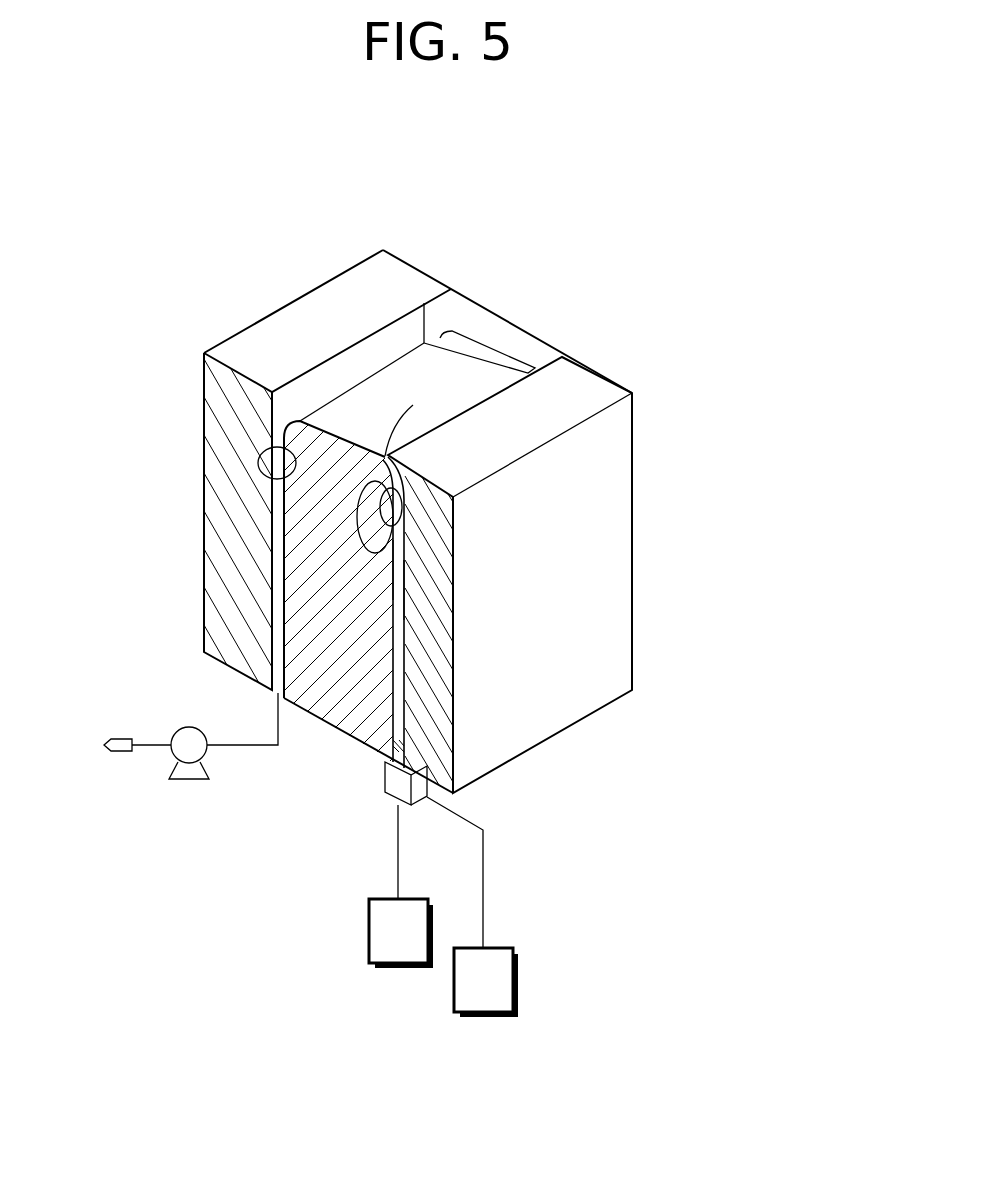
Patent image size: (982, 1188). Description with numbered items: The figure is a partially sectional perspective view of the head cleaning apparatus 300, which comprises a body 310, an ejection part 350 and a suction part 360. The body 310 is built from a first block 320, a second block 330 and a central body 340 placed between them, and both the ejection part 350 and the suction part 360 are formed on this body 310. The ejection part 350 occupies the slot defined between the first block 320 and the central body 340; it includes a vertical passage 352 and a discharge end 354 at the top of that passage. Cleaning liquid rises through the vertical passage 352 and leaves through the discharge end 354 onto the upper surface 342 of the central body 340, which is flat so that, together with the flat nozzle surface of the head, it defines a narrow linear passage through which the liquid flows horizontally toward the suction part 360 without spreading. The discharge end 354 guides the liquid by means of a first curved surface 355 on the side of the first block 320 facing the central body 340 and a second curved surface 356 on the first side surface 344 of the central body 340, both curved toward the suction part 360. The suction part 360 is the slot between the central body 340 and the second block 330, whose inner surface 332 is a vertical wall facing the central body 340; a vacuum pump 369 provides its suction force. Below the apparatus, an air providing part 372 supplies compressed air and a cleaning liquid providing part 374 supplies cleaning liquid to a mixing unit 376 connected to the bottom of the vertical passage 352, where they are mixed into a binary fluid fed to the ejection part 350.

The head cleaning apparatus 300 is at (565, 153).
The body 310 is at (203, 516).
The first block 320 is at (578, 377).
The second block 330 is at (313, 290).
The inner surface 332 is at (262, 450).
The central body 340 is at (486, 360).
The upper surface 342 is at (443, 382).
The first side surface 344 is at (393, 630).
The ejection part 350 is at (714, 518).
The vertical passage 352 is at (400, 583).
The discharge end 354 is at (398, 554).
The first curved surface 355 is at (393, 525).
The second curved surface 356 is at (413, 405).
The suction part 360 is at (270, 572).
The vacuum pump 369 is at (187, 782).
The air providing part 372 is at (418, 898).
The cleaning liquid providing part 374 is at (514, 980).
The mixing unit 376 is at (392, 776).